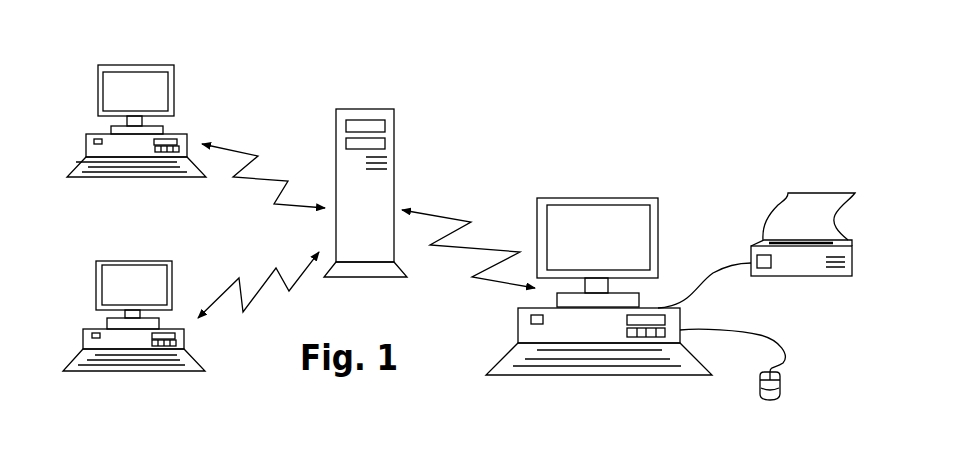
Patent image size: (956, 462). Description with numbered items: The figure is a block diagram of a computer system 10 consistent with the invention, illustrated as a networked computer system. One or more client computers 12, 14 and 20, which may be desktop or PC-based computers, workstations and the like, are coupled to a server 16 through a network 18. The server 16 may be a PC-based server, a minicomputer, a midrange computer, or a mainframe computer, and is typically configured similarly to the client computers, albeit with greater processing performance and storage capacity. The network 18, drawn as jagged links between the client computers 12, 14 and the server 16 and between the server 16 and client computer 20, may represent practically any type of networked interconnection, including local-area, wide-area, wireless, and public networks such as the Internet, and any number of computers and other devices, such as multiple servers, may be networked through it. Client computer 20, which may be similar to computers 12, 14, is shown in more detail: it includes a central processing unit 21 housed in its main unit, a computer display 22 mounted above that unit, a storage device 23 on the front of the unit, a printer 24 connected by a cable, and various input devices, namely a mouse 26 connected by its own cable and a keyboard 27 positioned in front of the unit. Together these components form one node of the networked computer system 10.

The computer system 10 is at (523, 115).
The client computer 12 is at (98, 82).
The client computer 14 is at (97, 263).
The server 16 is at (353, 110).
The network 18 is at (272, 180).
The client computer 20 is at (650, 198).
The central processing unit 21 is at (525, 332).
The computer display 22 is at (570, 202).
The storage device 23 is at (643, 337).
The printer 24 is at (765, 243).
The mouse 26 is at (775, 388).
The keyboard 27 is at (504, 372).